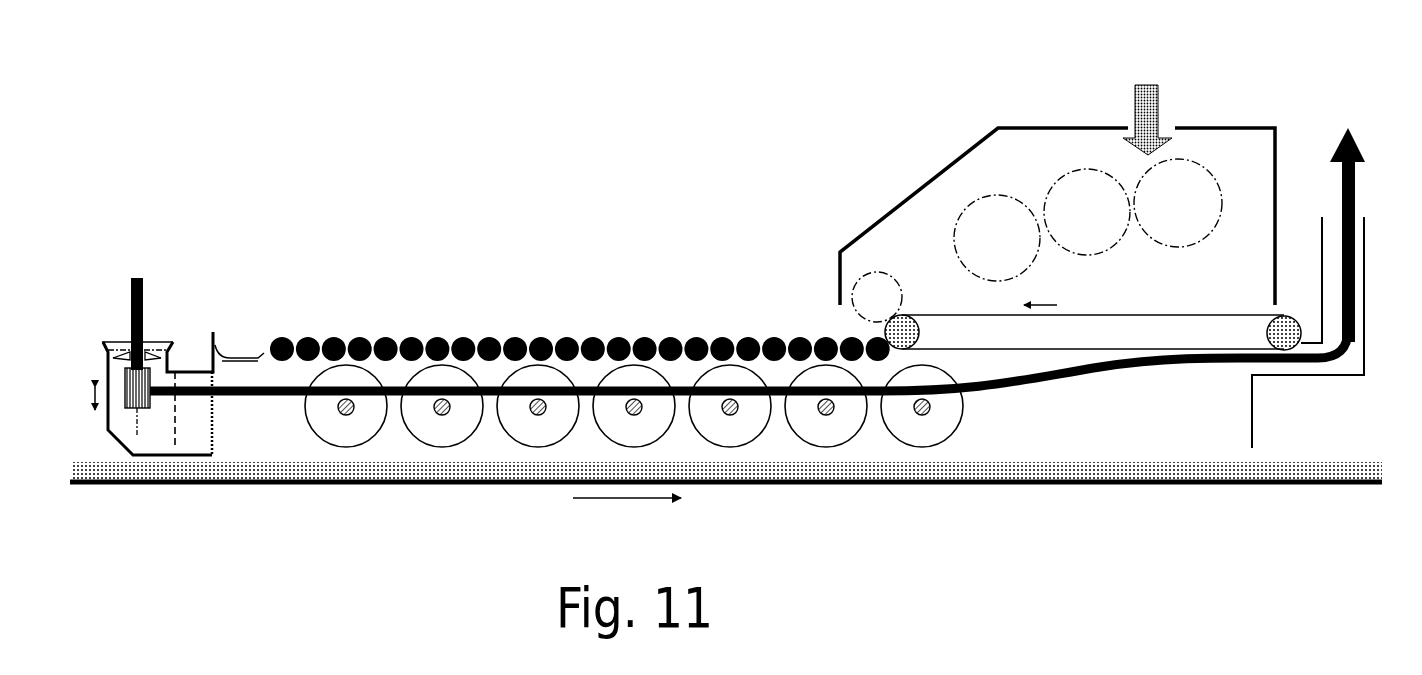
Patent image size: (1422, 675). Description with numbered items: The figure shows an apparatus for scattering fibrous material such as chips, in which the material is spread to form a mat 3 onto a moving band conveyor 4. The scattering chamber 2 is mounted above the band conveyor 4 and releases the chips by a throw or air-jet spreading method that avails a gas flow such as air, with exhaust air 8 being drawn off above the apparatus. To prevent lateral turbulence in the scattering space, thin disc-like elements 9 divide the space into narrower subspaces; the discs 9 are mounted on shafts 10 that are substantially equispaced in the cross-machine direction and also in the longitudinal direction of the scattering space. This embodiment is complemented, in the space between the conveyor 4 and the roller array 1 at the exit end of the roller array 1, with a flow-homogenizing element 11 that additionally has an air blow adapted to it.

The roller array 1 is at (427, 327).
The dispensing device 2 is at (902, 228).
The mat 3 is at (415, 470).
The band conveyor 4 is at (477, 483).
The exhaust air flow 8 is at (1350, 192).
The disc-like elements 9 is at (312, 428).
The shafts 10 is at (320, 418).
The flow-homogenizing element 11 is at (176, 422).